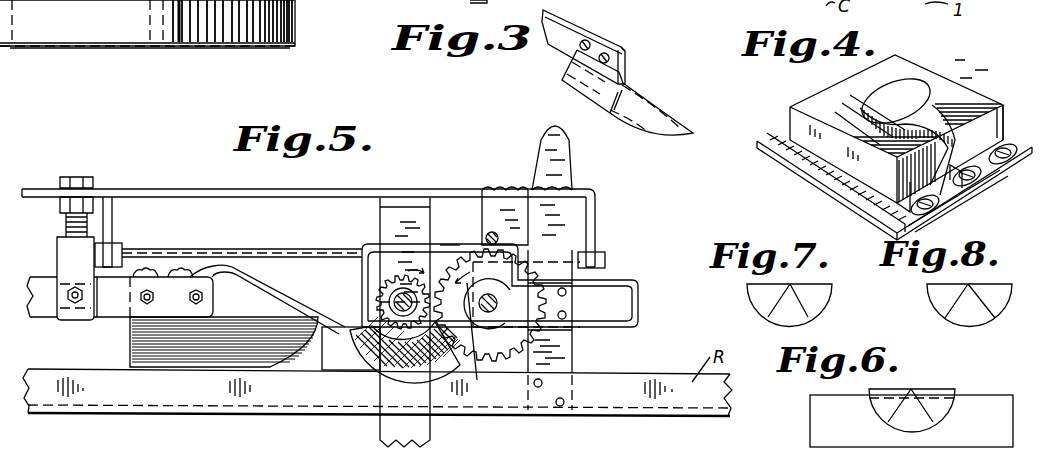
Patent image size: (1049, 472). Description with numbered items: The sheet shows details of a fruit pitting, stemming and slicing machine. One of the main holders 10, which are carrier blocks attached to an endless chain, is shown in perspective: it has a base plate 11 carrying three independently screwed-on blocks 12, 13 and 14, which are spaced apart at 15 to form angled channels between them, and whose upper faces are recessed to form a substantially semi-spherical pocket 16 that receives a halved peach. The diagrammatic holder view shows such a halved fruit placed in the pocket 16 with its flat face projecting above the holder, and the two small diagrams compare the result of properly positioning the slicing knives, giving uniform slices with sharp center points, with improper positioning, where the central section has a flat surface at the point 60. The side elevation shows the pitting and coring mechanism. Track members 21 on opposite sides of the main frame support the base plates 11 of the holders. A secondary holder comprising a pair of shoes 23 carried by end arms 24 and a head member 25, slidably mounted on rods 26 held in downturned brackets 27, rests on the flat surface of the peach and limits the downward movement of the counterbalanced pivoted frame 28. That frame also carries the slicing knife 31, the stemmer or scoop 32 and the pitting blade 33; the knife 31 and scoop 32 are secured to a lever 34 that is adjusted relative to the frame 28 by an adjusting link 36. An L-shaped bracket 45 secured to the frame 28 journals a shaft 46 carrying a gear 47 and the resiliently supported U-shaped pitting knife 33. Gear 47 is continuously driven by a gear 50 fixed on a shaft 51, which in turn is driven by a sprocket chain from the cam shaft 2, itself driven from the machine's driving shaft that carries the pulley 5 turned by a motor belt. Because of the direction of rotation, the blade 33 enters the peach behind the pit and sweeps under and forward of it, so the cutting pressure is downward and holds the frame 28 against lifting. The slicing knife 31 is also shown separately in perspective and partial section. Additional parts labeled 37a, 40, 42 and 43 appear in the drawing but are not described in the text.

In FIG. 3, the cam shaft 2 is at (472, 3).
In FIG. 3, the pulley 5 is at (268, 50).
In FIG. 4, the carrier block 10 is at (984, 90).
In FIG. 5, the carrier block 10 is at (322, 345).
In FIG. 4, the base plate 11 is at (835, 180).
In FIG. 4, the block 12 is at (790, 118).
In FIG. 4, the block 13 is at (967, 193).
In FIG. 4, the block 14 is at (1002, 117).
In FIG. 4, the channel 15 is at (973, 145).
In FIG. 4, the pocket 16 is at (903, 93).
In FIG. 5, the track member 21 is at (124, 392).
In FIG. 5, the shoe 23 is at (603, 330).
In FIG. 5, the end arm 24 is at (363, 283).
In FIG. 5, the head member 25 is at (440, 245).
In FIG. 5, the rod 26 is at (283, 249).
In FIG. 5, the downturned bracket 27 is at (108, 217).
In FIG. 5, the pivoted frame 28 is at (216, 168).
In FIG. 3, the slicing knife 31 is at (577, 88).
In FIG. 5, the slicing knife 31 is at (137, 338).
In FIG. 5, the stemmer or scoop 32 is at (268, 287).
In FIG. 5, the pitting blade 33 is at (432, 312).
In FIG. 3, the lever 34 is at (567, 13).
In FIG. 5, the lever 34 is at (43, 298).
In FIG. 5, the adjusting link 36 is at (68, 255).
In FIG. 5, the support post 37a is at (398, 210).
In FIG. 3, the housing 40 is at (314, 11).
In FIG. 3, the collar 42 is at (351, 16).
In FIG. 5, the catch 43 is at (487, 233).
In FIG. 5, the L-shaped bracket 45 is at (507, 217).
In FIG. 5, the shaft 46 is at (378, 312).
In FIG. 3, the gear 47 is at (401, 0).
In FIG. 5, the gear 47 is at (355, 312).
In FIG. 5, the gear 50 is at (460, 365).
In FIG. 5, the shaft 51 is at (508, 335).
In FIG. 8, the flat surface 60 is at (970, 285).